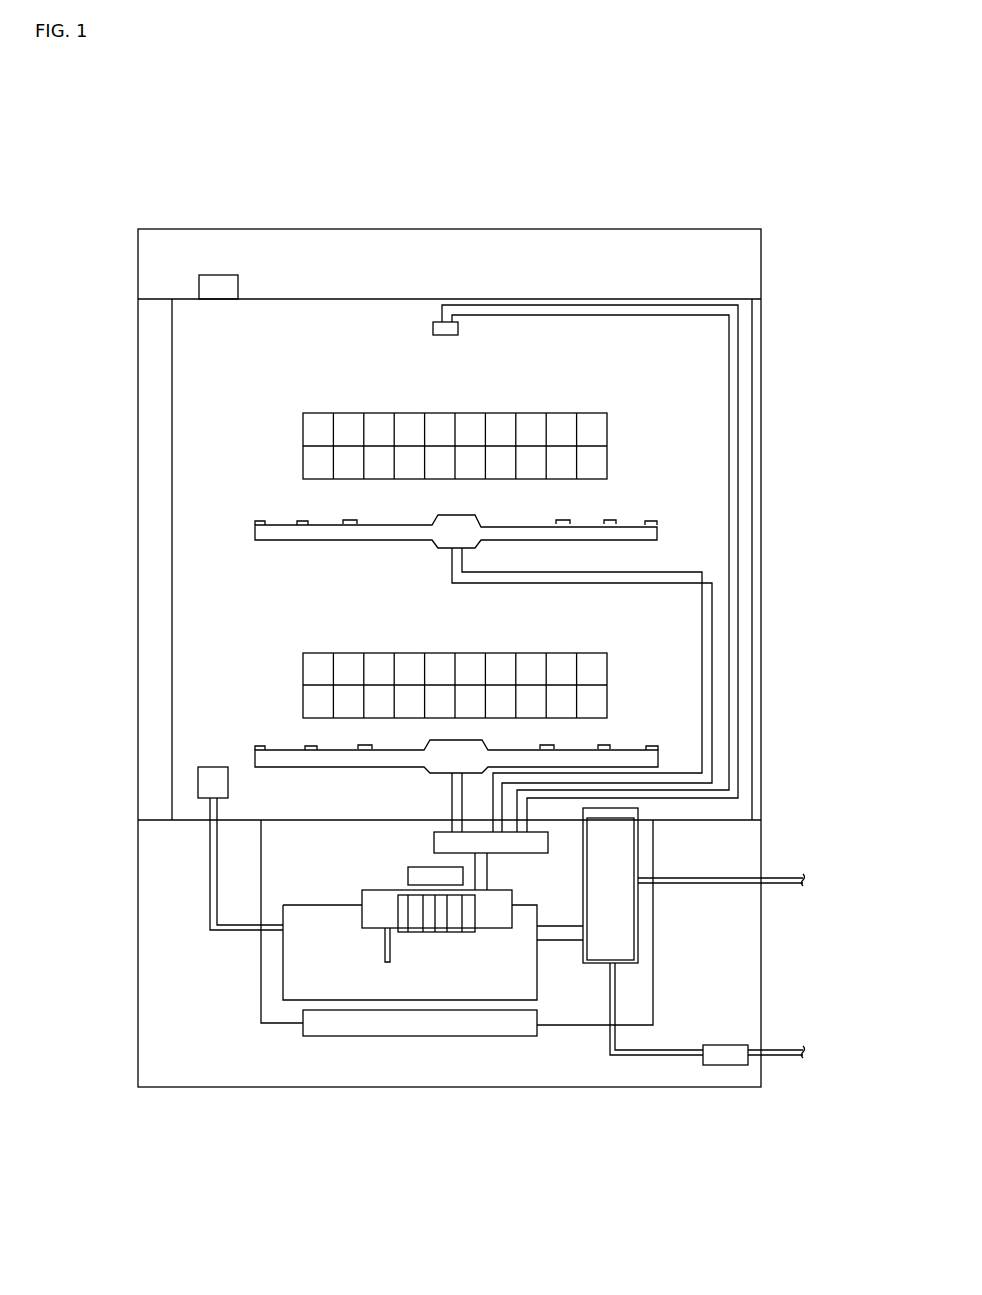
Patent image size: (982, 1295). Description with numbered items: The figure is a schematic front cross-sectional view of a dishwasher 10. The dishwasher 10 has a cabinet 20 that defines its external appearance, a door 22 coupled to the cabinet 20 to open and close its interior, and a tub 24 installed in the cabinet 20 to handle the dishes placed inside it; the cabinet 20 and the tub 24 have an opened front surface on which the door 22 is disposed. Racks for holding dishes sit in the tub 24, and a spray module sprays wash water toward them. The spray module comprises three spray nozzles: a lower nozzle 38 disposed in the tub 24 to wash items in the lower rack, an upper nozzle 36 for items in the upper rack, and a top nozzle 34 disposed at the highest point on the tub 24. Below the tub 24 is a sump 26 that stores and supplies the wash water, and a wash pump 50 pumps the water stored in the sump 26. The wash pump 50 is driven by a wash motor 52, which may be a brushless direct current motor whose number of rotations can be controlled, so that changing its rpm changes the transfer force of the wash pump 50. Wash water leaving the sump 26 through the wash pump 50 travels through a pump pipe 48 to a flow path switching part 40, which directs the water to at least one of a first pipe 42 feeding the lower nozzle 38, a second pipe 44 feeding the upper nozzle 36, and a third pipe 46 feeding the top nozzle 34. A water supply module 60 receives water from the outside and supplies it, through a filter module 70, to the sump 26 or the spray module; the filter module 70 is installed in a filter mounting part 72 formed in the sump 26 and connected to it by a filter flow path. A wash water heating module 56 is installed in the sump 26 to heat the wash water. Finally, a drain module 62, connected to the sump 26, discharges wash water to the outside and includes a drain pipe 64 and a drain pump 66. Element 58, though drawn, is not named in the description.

The dishwasher 10 is at (119, 157).
The cabinet 20 is at (735, 242).
The door 22 is at (148, 392).
The tub 24 is at (753, 430).
The sump 26 is at (257, 1016).
The top nozzle 34 is at (468, 322).
The upper nozzle 36 is at (657, 533).
The lower nozzle 38 is at (658, 760).
The flow path switching part 40 is at (548, 843).
The first pipe 42 is at (450, 790).
The second pipe 44 is at (712, 677).
The third pipe 46 is at (738, 588).
The pump pipe 48 is at (487, 872).
The wash pump 50 is at (372, 932).
The wash motor 52 is at (415, 878).
The wash water heating module 56 is at (393, 1044).
The dispenser 58 is at (213, 780).
The water supply module 60 is at (730, 877).
The drain module 62 is at (707, 1066).
The drain pipe 64 is at (662, 1057).
The drain pump 66 is at (727, 1057).
The filter module 70 is at (625, 937).
The filter mounting part 72 is at (640, 955).